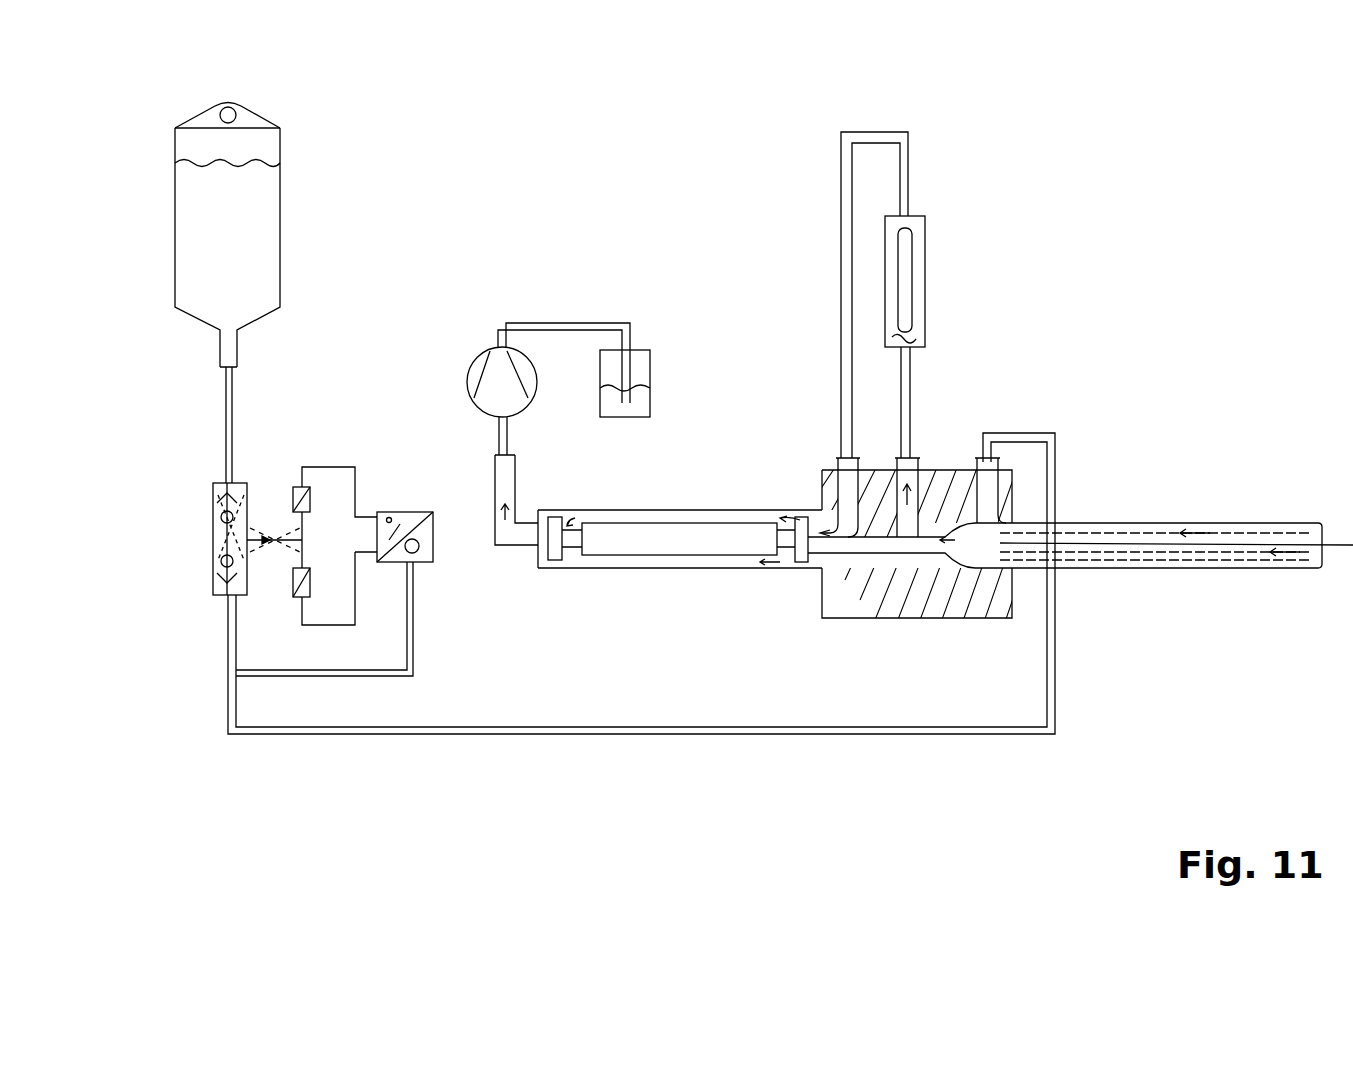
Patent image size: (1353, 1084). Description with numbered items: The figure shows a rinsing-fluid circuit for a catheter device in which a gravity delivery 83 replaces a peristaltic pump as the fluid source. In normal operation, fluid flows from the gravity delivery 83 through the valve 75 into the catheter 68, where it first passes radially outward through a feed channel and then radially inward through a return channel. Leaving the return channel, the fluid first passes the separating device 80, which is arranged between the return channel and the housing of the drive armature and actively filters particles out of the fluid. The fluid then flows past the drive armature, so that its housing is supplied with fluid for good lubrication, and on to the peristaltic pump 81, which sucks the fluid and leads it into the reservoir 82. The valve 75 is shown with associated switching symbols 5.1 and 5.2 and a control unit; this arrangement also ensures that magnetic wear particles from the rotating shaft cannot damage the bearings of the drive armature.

The gravity delivery 83 is at (283, 222).
The valve 75 is at (213, 511).
The sensor element 5.1 is at (317, 500).
The sensor element 5.2 is at (317, 582).
The peristaltic pump 81 is at (480, 362).
The reservoir 82 is at (650, 396).
The separating device 80 is at (925, 272).
The catheter 68 is at (1212, 570).